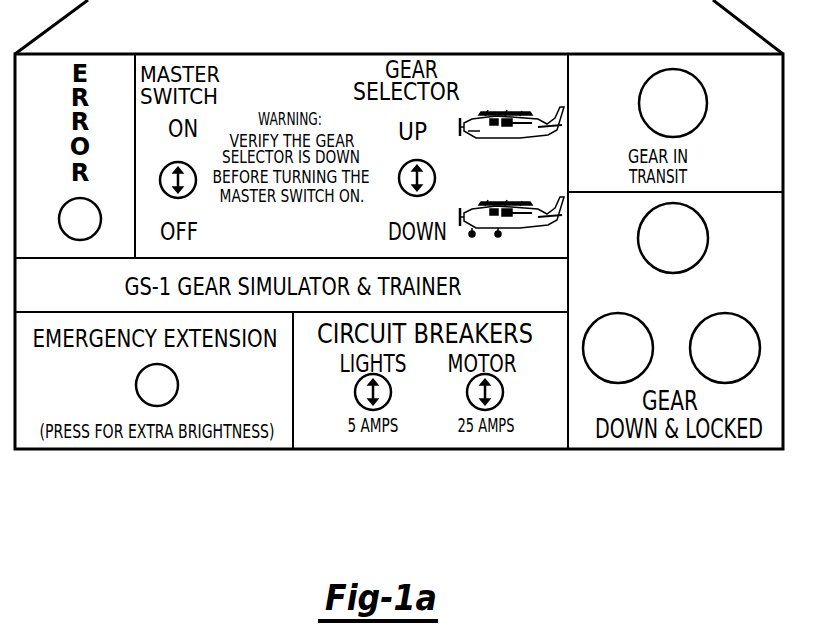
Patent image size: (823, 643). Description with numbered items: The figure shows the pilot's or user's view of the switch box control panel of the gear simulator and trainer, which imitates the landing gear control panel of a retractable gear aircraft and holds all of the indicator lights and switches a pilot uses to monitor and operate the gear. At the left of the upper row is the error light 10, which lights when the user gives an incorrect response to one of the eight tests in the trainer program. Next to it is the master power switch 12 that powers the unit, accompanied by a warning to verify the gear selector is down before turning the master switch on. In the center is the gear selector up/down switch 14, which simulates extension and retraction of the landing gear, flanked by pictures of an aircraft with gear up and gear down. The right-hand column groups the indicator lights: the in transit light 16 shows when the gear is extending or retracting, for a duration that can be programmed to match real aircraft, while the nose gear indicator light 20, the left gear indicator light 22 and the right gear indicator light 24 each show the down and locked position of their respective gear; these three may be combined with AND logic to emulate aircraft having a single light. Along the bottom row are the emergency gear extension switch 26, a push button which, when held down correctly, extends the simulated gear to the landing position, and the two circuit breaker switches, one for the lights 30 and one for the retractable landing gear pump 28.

The error light 10 is at (62, 201).
The master power switch 12 is at (160, 181).
The gear selector up/down switch 14 is at (399, 181).
The in transit light 16 is at (708, 106).
The nose gear indicator light 20 is at (697, 212).
The left gear indicator light 22 is at (593, 322).
The right gear indicator light 24 is at (750, 322).
The emergency gear extension switch 26 is at (135, 384).
The landing gear pump circuit breaker switch 28 is at (467, 392).
The lights circuit breaker switch 30 is at (355, 392).